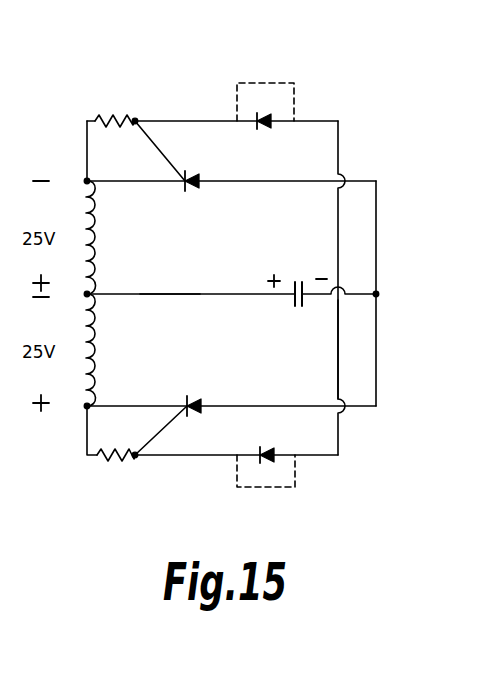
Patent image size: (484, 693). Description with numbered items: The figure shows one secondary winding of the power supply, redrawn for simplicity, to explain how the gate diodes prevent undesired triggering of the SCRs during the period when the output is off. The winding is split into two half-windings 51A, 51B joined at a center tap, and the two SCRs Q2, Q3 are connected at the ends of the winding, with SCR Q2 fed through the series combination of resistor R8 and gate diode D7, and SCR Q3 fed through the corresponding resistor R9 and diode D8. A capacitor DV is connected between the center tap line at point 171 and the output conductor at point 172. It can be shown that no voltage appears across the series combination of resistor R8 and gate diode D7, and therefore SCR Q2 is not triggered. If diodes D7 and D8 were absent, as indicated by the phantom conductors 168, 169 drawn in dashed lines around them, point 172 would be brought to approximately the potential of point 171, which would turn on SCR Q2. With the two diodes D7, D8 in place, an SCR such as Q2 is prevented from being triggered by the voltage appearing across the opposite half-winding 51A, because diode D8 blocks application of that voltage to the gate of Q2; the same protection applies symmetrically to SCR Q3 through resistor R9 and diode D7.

The half-winding 51A is at (92, 334).
The half-winding 51B is at (92, 230).
The phantom conductor 168 is at (272, 487).
The phantom conductor 169 is at (272, 83).
The point 171 is at (166, 295).
The point 172 is at (338, 345).
The resistor R8 is at (116, 109).
The resistor R9 is at (117, 470).
The SCR Q2 is at (178, 163).
The SCR Q3 is at (172, 408).
The gate diode D7 is at (271, 133).
The diode D8 is at (273, 442).
The capacitor DV is at (297, 276).